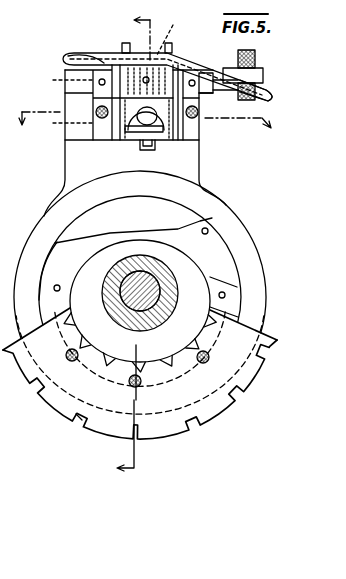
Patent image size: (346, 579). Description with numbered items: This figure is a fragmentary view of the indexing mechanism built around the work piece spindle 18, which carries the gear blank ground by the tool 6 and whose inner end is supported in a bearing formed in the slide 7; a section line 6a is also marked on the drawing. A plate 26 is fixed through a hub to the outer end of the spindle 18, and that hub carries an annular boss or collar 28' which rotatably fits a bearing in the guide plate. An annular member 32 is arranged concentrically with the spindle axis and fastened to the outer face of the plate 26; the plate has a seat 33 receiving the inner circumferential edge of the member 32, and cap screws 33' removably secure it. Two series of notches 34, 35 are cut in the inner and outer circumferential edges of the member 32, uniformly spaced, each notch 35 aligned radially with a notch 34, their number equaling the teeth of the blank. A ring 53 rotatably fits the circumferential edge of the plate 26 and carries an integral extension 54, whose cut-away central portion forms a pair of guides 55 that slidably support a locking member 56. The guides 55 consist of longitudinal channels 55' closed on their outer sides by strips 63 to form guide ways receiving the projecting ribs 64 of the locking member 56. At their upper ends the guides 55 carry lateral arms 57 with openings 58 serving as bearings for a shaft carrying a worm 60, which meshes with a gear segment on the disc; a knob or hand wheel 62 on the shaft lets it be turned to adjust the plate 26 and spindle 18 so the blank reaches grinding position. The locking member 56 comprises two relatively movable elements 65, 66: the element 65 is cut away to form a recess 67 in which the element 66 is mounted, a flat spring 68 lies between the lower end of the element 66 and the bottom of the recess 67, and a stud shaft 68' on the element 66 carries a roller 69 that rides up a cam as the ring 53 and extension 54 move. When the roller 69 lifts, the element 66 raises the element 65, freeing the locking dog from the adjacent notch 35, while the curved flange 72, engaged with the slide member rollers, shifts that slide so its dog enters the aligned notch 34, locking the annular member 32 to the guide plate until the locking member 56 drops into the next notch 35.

The tool 6 is at (125, 244).
The section line 6a is at (175, 31).
The slide 7 is at (146, 128).
The work piece spindle 18 is at (117, 322).
The plate 26 is at (200, 277).
The annular boss or collar 28' is at (146, 287).
The annular member 32 is at (250, 376).
The seat 33 is at (161, 305).
The cap screws 33' is at (234, 218).
The notches 34 is at (108, 362).
The notches 35 is at (80, 422).
The ring 53 is at (258, 266).
The extension 54 is at (192, 157).
The guides 55 is at (152, 102).
The longitudinal channels 55' is at (113, 133).
The locking member 56 is at (145, 141).
The arms 57 is at (105, 58).
The openings 58 is at (66, 65).
The worm 60 is at (5, 65).
The knob or hand wheel 62 is at (255, 55).
The strips 63 is at (100, 137).
The projecting ribs 64 is at (112, 64).
The element 65 is at (201, 140).
The element 66 is at (126, 136).
The recess 67 is at (93, 100).
The spring 68 is at (233, 102).
The stud shaft 68' is at (127, 151).
The roller 69 is at (206, 115).
The flange 72 is at (270, 88).